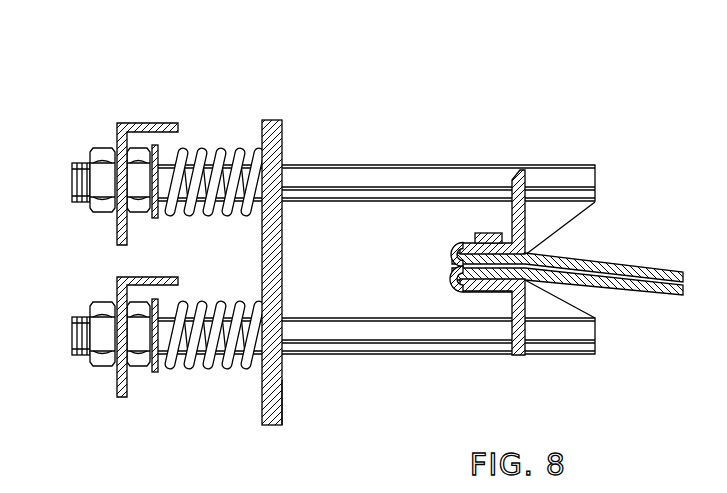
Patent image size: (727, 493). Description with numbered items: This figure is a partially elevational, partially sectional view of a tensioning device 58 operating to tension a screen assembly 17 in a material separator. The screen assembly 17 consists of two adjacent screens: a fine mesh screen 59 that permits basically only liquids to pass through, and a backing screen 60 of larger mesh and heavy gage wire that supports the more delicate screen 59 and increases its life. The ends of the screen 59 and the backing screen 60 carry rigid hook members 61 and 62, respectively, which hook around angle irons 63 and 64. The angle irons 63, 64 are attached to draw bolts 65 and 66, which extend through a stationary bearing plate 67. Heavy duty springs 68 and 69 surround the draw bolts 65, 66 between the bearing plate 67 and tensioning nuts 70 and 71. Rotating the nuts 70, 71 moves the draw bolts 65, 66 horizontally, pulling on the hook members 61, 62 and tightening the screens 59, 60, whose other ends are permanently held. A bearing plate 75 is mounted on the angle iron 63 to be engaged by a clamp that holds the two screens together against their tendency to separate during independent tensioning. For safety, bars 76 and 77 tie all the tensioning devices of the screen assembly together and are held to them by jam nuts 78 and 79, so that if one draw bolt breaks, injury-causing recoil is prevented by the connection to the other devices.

The screen assembly 17 is at (609, 245).
The tensioning device 58 is at (269, 108).
The screen 59 is at (658, 270).
The backing screen 60 is at (665, 297).
The hook member 61 is at (462, 243).
The hook member 62 is at (465, 292).
The angle iron 63 is at (513, 178).
The angle iron 64 is at (520, 345).
The draw bolt 65 is at (72, 180).
The draw bolt 66 is at (72, 332).
The bearing plate 67 is at (282, 405).
The spring 68 is at (222, 157).
The spring 69 is at (225, 360).
The tensioning nut 70 is at (138, 157).
The tensioning nut 71 is at (143, 366).
The bearing plate 75 is at (490, 234).
The bar 76 is at (122, 123).
The bar 77 is at (120, 397).
The jam nut 78 is at (102, 157).
The jam nut 79 is at (95, 364).